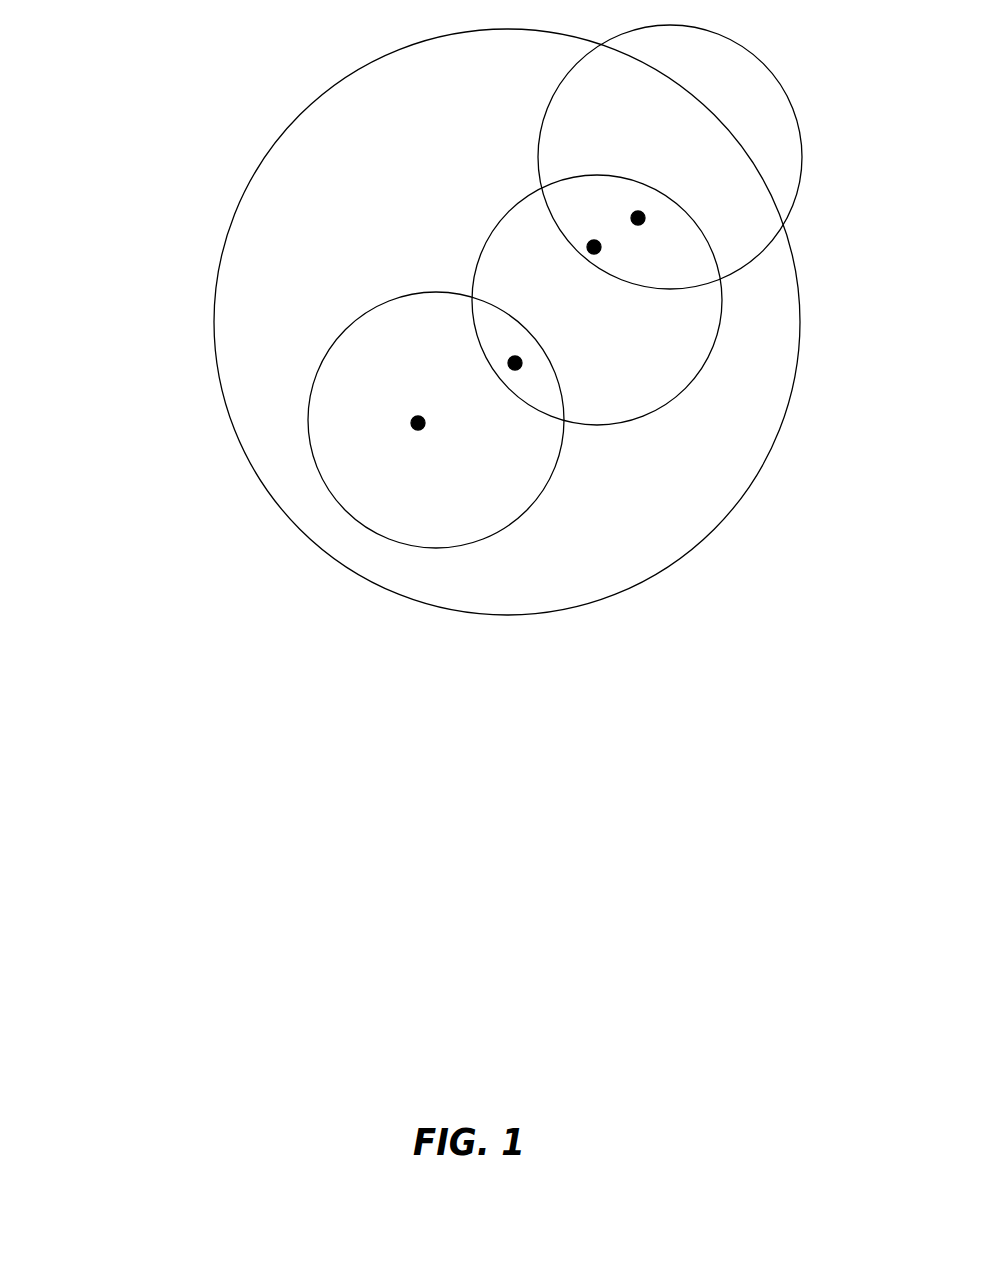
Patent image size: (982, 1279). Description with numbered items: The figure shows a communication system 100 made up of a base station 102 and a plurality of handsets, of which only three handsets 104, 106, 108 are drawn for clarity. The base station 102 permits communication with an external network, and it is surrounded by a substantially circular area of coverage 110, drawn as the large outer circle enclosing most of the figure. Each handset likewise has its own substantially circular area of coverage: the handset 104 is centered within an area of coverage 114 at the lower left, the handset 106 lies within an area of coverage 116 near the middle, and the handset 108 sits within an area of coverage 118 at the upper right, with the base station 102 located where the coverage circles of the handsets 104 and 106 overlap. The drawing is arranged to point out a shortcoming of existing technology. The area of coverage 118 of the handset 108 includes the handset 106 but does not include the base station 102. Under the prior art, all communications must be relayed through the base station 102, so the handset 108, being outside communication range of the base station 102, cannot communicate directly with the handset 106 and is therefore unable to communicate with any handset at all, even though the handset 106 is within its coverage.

The system 100 is at (90, 618).
The base station 102 is at (515, 363).
The handset 104 is at (418, 423).
The handset 106 is at (594, 247).
The handset 108 is at (638, 218).
The area of coverage 110 is at (800, 320).
The area of coverage 114 is at (360, 526).
The area of coverage 116 is at (723, 307).
The area of coverage 118 is at (800, 142).